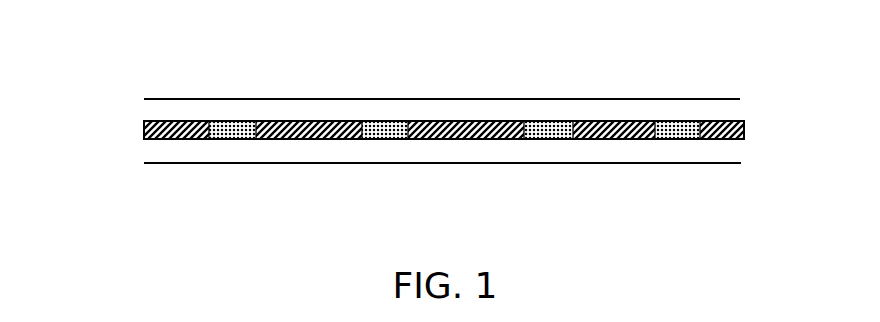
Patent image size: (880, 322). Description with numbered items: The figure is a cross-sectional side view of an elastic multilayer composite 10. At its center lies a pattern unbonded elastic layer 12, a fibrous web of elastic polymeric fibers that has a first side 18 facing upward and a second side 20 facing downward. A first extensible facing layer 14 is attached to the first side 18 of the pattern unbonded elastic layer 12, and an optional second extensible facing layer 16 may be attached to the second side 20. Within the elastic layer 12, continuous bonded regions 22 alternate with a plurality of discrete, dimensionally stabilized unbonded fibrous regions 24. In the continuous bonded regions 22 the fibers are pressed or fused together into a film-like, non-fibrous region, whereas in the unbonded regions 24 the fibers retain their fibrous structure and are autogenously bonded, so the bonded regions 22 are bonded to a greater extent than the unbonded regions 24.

The elastic multilayer composite 10 is at (208, 86).
The pattern unbonded elastic layer 12 is at (144, 128).
The first extensible facing layer 14 is at (144, 109).
The second extensible facing layer 16 is at (144, 153).
The first side 18 is at (621, 122).
The second side 20 is at (610, 141).
The continuous bonded regions 22 is at (423, 123).
The unbonded fibrous regions 24 is at (244, 141).